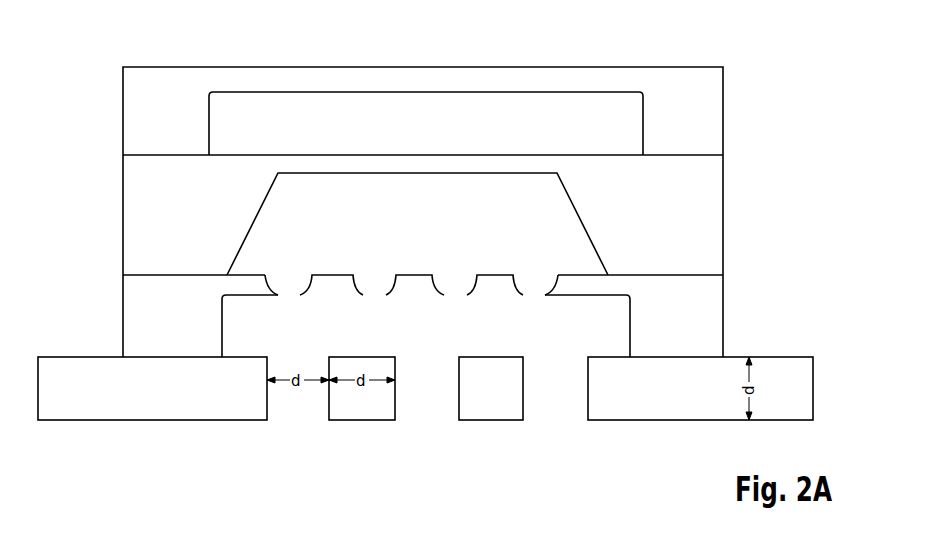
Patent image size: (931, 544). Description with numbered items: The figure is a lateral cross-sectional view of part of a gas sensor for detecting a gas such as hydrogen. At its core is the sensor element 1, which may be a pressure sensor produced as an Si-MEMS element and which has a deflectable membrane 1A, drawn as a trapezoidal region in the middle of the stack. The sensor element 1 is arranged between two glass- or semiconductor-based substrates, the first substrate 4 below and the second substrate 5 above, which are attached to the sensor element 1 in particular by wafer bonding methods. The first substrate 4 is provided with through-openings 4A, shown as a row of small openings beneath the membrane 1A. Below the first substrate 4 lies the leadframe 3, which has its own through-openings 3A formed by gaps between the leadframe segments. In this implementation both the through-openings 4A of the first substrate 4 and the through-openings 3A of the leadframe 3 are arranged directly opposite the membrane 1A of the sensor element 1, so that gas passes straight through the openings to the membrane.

The sensor element 1 is at (727, 182).
The deflectable membrane 1A is at (416, 162).
The leadframe 3 is at (110, 370).
The through-openings of the leadframe 3A is at (550, 407).
The first substrate 4 is at (708, 315).
The through-openings of the first substrate 4A is at (537, 285).
The second substrate 5 is at (140, 97).